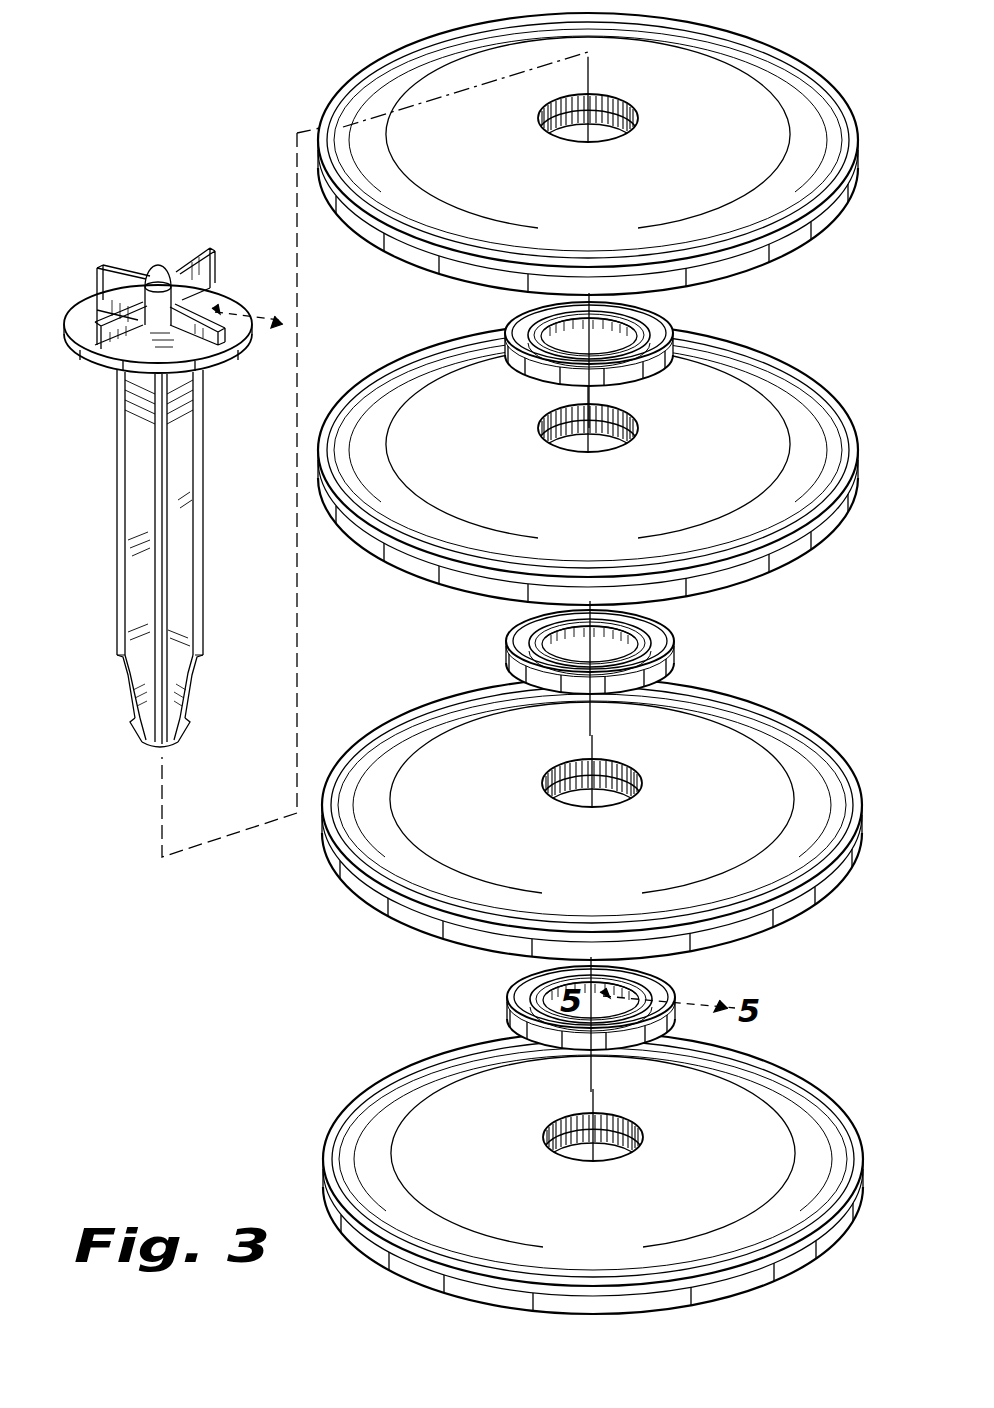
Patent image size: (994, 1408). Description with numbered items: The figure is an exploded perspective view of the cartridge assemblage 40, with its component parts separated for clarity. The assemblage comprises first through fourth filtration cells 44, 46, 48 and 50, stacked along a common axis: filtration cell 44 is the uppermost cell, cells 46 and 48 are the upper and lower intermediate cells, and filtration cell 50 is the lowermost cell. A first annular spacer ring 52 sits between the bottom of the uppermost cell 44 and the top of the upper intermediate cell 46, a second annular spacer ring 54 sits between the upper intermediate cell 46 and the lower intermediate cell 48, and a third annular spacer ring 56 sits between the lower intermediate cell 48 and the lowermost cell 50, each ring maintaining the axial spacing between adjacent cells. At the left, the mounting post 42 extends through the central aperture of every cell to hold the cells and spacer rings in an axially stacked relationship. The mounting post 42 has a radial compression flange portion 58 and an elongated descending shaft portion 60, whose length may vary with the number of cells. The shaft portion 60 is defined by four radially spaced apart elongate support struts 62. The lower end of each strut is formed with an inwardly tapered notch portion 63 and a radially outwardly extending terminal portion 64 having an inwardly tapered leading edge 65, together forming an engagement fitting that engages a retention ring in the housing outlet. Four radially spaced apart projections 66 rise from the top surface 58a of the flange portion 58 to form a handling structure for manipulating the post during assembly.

The cartridge assemblage 40 is at (216, 140).
The mounting post 42 is at (175, 492).
The first filtration cell 44 is at (757, 117).
The second filtration cell 46 is at (730, 397).
The third filtration cell 48 is at (718, 742).
The fourth filtration cell 50 is at (748, 1123).
The first annular spacer ring 52 is at (515, 322).
The second annular spacer ring 54 is at (512, 642).
The third annular spacer ring 56 is at (507, 1000).
The radial compression flange portion 58 is at (103, 364).
The top surface of radial flange portion 58a is at (73, 325).
The elongated descending shaft portion 60 is at (152, 609).
The support struts 62 is at (138, 562).
The inwardly tapered notch portion 63 is at (132, 682).
The terminal portion 64 is at (147, 752).
The inwardly tapered leading edge 65 is at (132, 738).
The projections 66 is at (104, 262).